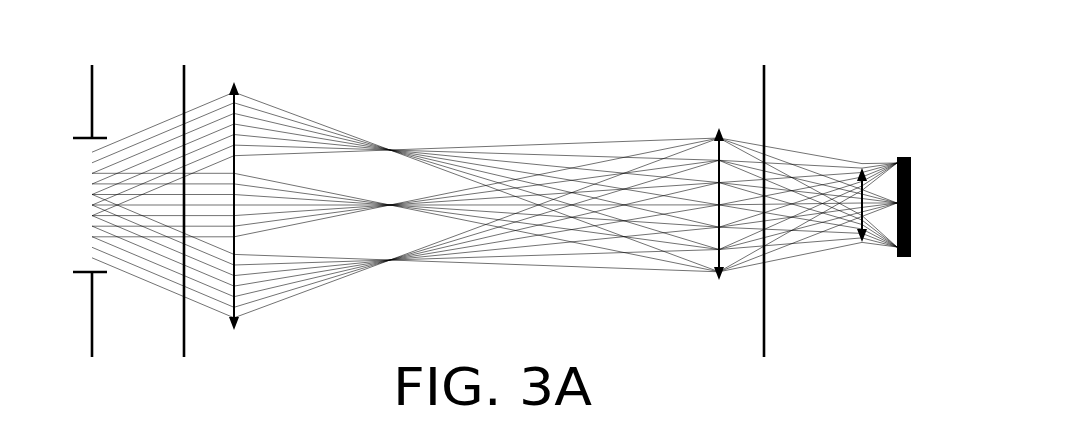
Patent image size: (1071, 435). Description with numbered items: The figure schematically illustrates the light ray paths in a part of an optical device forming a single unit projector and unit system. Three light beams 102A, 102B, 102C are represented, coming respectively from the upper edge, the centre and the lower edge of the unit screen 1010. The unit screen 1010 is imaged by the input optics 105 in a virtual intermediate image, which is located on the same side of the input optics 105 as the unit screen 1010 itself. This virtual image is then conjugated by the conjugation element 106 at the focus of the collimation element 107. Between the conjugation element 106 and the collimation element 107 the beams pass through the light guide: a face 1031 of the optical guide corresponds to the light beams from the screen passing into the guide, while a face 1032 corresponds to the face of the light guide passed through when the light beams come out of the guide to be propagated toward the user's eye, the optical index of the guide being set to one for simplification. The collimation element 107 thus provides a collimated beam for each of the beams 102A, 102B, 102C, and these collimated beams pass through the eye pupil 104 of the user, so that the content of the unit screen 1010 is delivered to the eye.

The eye pupil 104 is at (73, 128).
The face of the light guide 1032 is at (184, 76).
The collimation element 107 is at (238, 96).
The light beam 102C is at (305, 128).
The light beam 102B is at (322, 216).
The light beam 102A is at (270, 288).
The conjugation element 106 is at (700, 246).
The face of the optical guide 1031 is at (763, 94).
The input optics 105 is at (855, 185).
The unit screen 1010 is at (903, 157).